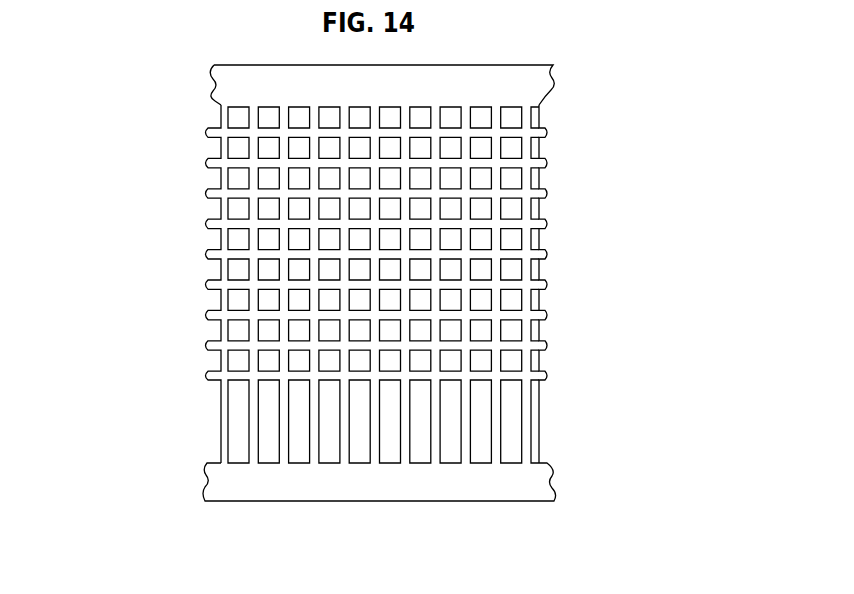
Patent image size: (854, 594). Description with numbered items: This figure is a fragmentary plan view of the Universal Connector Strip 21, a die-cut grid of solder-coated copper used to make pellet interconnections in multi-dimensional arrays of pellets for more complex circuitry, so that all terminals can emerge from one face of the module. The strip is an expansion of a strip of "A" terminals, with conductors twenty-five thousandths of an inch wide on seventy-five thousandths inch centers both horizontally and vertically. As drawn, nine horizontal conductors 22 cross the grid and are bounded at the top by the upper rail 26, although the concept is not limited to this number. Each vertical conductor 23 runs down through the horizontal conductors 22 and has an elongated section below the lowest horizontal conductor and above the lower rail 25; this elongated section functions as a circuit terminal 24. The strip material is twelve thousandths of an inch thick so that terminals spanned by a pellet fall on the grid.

The Universal Connector Strip 21 is at (385, 280).
The horizontal conductor 22 is at (540, 123).
The vertical conductor 23 is at (217, 203).
The circuit terminal 24 is at (220, 404).
The lower rail 25 is at (544, 462).
The upper rail 26 is at (233, 64).